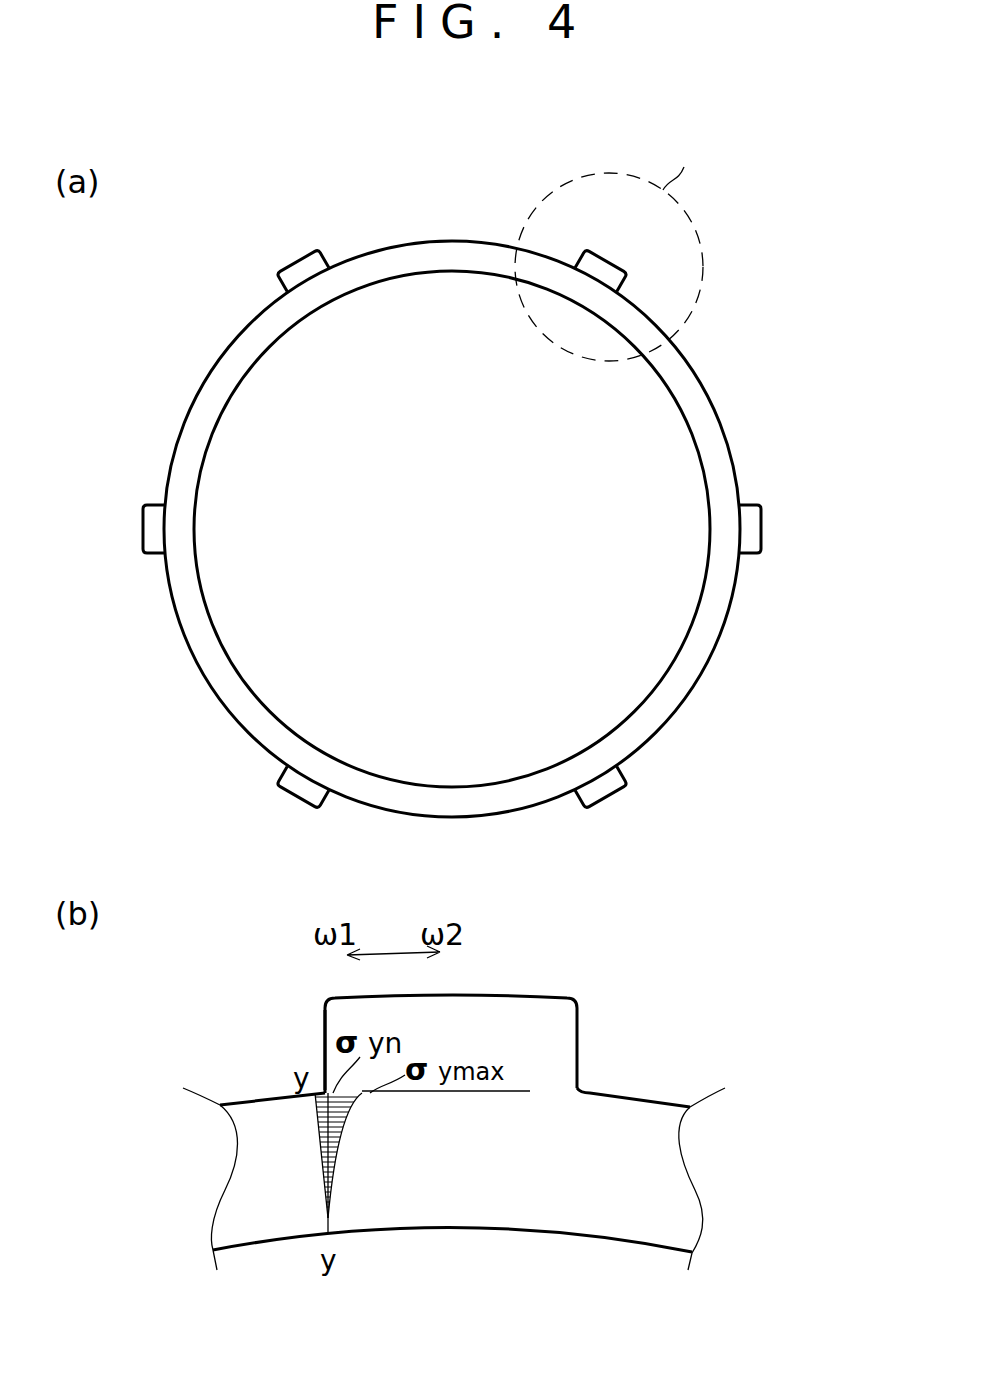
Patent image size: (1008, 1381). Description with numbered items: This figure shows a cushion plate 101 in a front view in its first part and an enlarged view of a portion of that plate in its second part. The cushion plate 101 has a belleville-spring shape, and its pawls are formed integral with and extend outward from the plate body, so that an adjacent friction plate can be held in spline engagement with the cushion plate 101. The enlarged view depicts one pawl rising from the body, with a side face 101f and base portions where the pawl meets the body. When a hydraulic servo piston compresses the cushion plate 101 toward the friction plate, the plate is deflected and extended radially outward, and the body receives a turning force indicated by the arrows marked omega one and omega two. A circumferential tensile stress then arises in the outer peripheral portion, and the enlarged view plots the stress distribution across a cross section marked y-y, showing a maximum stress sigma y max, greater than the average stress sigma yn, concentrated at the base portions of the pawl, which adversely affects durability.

The cushion plate 101 is at (470, 166).
The tab side face 101f is at (325, 1025).